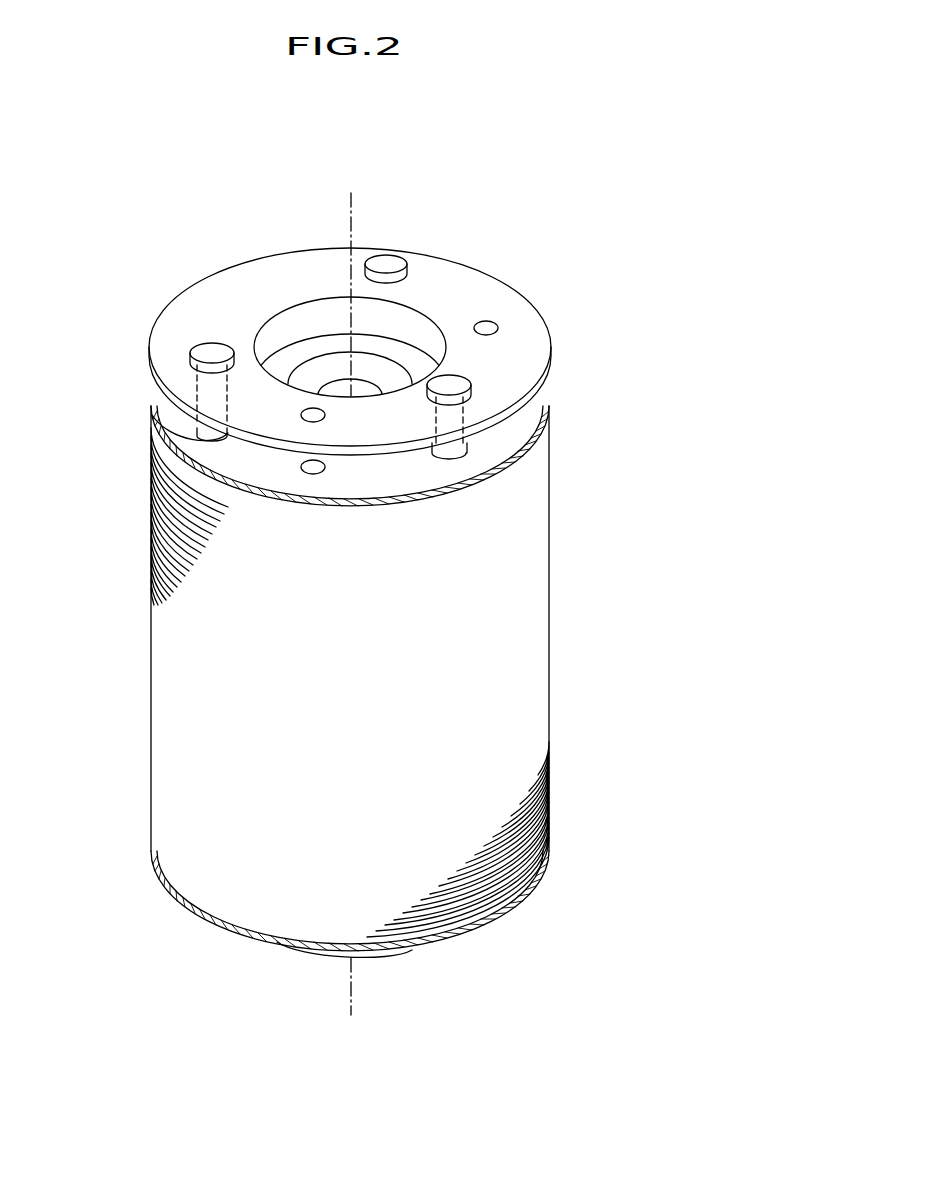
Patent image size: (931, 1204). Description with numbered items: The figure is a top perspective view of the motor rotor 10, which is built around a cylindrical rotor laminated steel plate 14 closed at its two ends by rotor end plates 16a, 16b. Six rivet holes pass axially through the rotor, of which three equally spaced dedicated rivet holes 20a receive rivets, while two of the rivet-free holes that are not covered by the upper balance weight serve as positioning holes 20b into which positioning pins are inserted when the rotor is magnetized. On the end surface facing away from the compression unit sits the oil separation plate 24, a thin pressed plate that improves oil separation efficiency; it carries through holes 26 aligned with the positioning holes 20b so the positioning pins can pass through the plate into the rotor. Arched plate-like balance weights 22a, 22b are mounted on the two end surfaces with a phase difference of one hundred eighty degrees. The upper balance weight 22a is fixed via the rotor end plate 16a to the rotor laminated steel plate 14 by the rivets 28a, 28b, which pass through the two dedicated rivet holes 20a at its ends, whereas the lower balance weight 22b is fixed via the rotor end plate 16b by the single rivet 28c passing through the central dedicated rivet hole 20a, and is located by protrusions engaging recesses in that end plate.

The motor rotor 10 is at (513, 166).
The rotor laminated steel plate 14 is at (497, 590).
The rotor end plate 16a is at (527, 413).
The rotor end plate 16b is at (218, 922).
The dedicated rivet hole 20a is at (463, 444).
The positioning hole 20b is at (318, 470).
The balance weight 22a is at (173, 412).
The balance weight 22b is at (410, 953).
The oil separation plate 24 is at (258, 283).
The through hole 26 is at (487, 328).
The rivet 28a is at (212, 352).
The rivet 28b is at (386, 264).
The rivet 28c is at (454, 447).